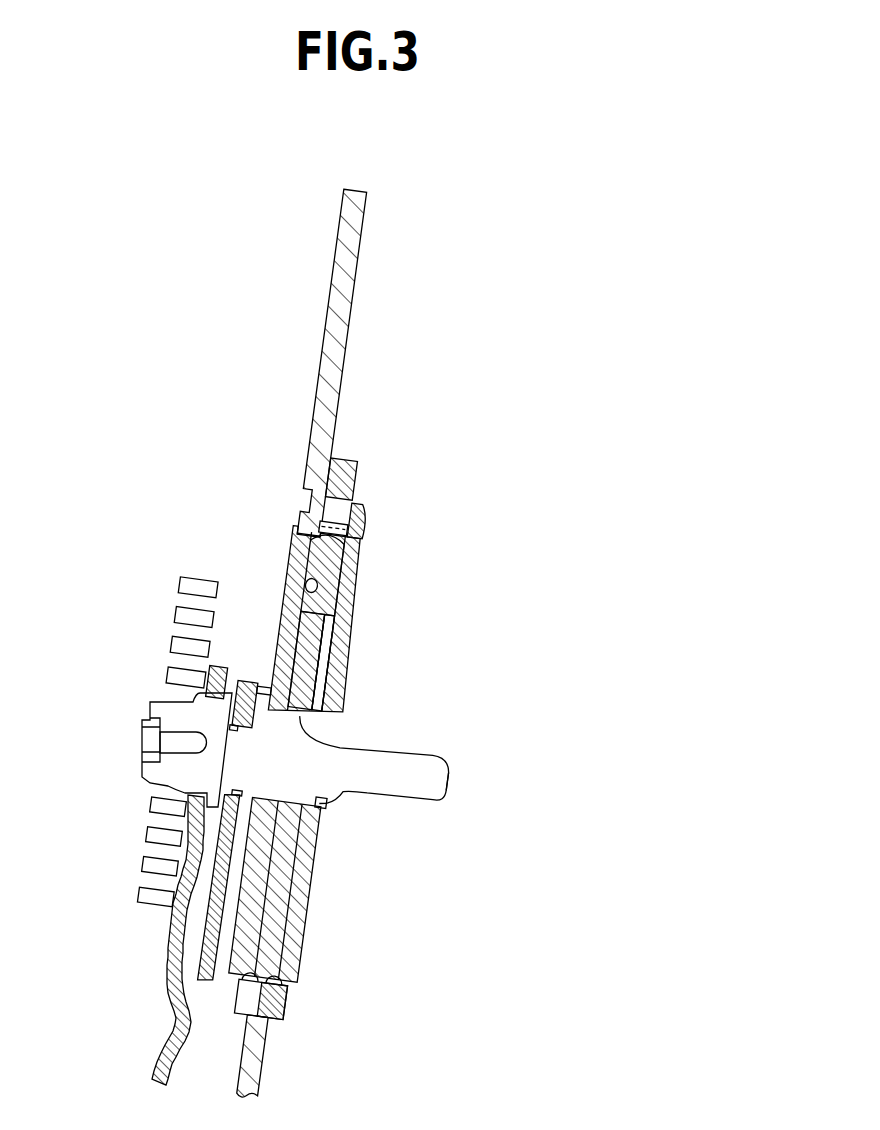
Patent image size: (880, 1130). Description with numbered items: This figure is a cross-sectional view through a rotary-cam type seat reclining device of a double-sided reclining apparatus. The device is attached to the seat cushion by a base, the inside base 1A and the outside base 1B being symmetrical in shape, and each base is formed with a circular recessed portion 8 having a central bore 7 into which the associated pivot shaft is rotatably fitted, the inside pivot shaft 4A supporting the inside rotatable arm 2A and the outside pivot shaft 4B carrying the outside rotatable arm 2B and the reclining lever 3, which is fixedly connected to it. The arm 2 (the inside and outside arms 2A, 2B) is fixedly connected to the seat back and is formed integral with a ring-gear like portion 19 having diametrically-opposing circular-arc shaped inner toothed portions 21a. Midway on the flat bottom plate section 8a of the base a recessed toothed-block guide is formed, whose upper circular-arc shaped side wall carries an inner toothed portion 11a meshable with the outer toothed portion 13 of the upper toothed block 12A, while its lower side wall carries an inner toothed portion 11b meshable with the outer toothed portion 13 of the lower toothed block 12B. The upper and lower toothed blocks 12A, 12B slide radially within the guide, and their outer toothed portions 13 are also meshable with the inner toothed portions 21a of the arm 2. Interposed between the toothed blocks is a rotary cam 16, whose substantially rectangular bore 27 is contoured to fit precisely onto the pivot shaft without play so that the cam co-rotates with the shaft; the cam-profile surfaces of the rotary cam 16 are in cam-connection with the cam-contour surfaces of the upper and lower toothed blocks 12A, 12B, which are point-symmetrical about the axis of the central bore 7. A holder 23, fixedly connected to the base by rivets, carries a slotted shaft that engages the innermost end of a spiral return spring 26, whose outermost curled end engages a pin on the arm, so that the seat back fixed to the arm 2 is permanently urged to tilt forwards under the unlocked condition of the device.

The arm 2 is at (428, 362).
The inside rotatable arm 2A is at (428, 362).
The outside rotatable arm 2B is at (353, 292).
The outer toothed portion 13 is at (362, 508).
The inner toothed portion 11a is at (363, 538).
The circular recessed portion 8 is at (355, 560).
The upper toothed block 12A is at (300, 548).
The inner toothed portion 21a is at (288, 523).
The ring-gear like portion 19 is at (307, 583).
The flat bottom plate section 8a is at (343, 612).
The rotary cam 16 is at (343, 668).
The inside pivot shaft 4A is at (387, 765).
The outside pivot shaft 4B is at (330, 740).
The substantially rectangular bore 27 is at (447, 781).
The central bore 7 is at (337, 803).
The lower toothed block 12B is at (277, 943).
The inner toothed portion 11b is at (295, 990).
The inside base 1A is at (313, 1060).
The outside base 1B is at (263, 1068).
The reclining lever 3 is at (203, 966).
The holder 23 is at (150, 1076).
The return spring 26 is at (182, 586).